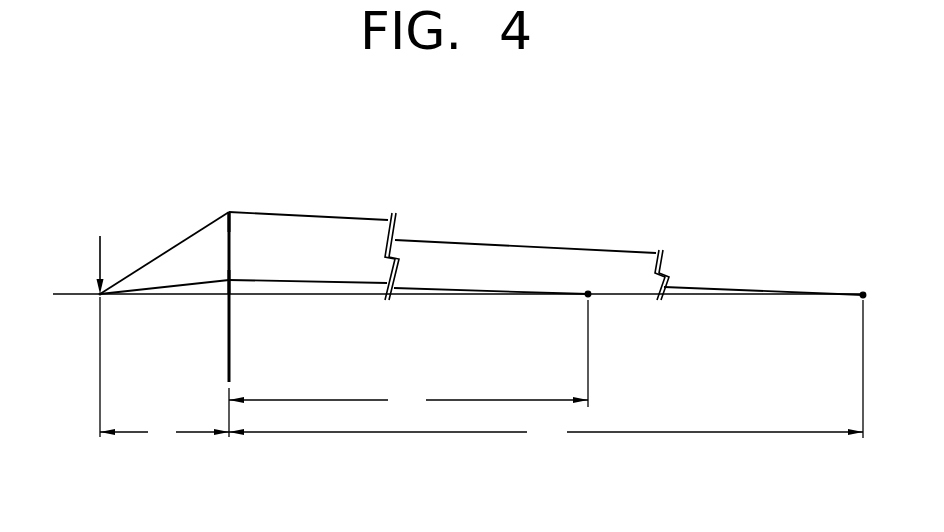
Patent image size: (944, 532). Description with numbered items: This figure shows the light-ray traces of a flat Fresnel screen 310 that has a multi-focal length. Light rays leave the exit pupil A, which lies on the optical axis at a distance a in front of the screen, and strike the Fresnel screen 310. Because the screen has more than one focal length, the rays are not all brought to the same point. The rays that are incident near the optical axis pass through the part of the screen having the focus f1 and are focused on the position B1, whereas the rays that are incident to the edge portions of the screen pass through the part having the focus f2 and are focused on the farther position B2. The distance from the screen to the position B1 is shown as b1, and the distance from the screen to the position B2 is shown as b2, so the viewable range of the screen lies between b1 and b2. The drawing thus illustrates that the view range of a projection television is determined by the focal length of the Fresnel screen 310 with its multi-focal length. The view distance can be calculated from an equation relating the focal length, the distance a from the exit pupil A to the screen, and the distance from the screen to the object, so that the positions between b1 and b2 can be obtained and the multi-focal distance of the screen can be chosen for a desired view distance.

The flat Fresnel screen 310 is at (229, 232).
The exit pupil A is at (105, 255).
The focus position B1 is at (603, 309).
The focus position B2 is at (850, 309).
The focus f1 is at (240, 272).
The focus f2 is at (237, 208).
The distance from exit pupil to screen a is at (164, 431).
The view range distance b1 is at (408, 399).
The view range distance b2 is at (546, 433).